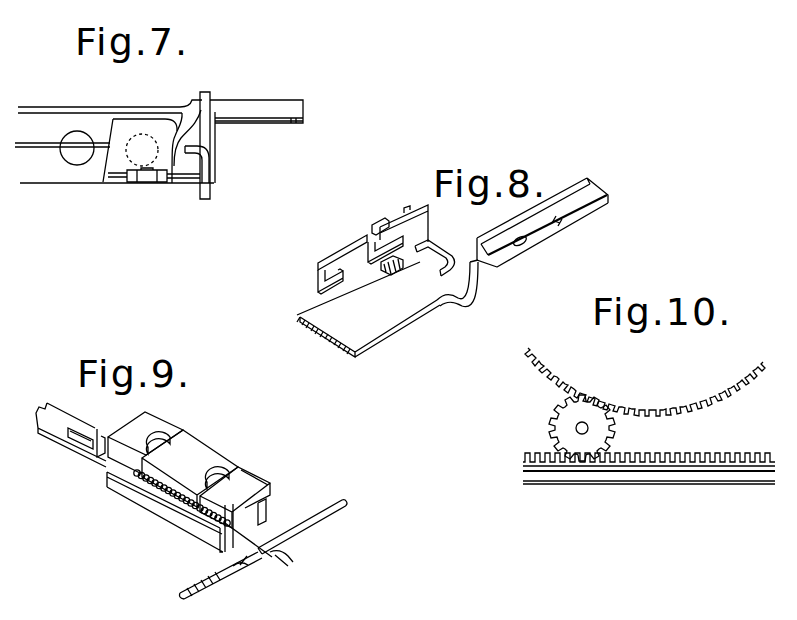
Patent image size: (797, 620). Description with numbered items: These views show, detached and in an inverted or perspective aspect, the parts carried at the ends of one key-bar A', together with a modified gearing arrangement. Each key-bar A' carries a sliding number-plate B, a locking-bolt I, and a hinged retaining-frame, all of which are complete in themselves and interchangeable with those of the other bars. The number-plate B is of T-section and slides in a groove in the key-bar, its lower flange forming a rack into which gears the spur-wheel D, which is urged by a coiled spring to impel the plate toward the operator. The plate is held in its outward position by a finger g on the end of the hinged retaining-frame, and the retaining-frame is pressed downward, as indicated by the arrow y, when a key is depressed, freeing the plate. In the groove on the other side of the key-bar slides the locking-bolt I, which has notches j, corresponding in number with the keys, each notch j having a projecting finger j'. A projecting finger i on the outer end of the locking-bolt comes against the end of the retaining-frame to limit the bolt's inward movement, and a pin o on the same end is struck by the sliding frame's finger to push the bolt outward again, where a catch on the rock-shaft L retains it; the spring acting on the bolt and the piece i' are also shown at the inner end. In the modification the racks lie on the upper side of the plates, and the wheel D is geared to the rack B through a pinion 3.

In FIG. 7, the key-bar A' is at (62, 144).
In FIG. 9, the key-bar A' is at (189, 470).
In FIG. 7, the body of carriage frame a is at (117, 151).
In FIG. 8, the body of carriage frame a is at (368, 309).
In FIG. 7, the finger g is at (193, 136).
In FIG. 8, the finger g is at (480, 283).
In FIG. 7, the sliding rack-plate or number-plate B is at (256, 107).
In FIG. 8, the sliding rack-plate or number-plate B is at (542, 222).
In FIG. 10, the sliding rack-plate or number-plate B is at (649, 478).
In FIG. 7, the projecting finger i is at (197, 156).
In FIG. 8, the projecting finger i is at (435, 258).
In FIG. 9, the projecting finger i is at (259, 544).
In FIG. 7, the locking-bolt I is at (181, 178).
In FIG. 8, the locking-bolt I is at (356, 258).
In FIG. 9, the locking-bolt I is at (85, 452).
In FIG. 7, the pin o is at (209, 147).
In FIG. 8, the pin o is at (404, 218).
In FIG. 8, the projecting finger j' is at (345, 255).
In FIG. 8, the notch j is at (385, 255).
In FIG. 9, the notch j is at (90, 430).
In FIG. 8, the direction of movement y is at (432, 288).
In FIG. 9, the spring piece i' is at (241, 573).
In FIG. 9, the rock-shaft L is at (302, 527).
In FIG. 10, the spur-wheel D is at (645, 382).
In FIG. 10, the pinion 3 is at (587, 428).